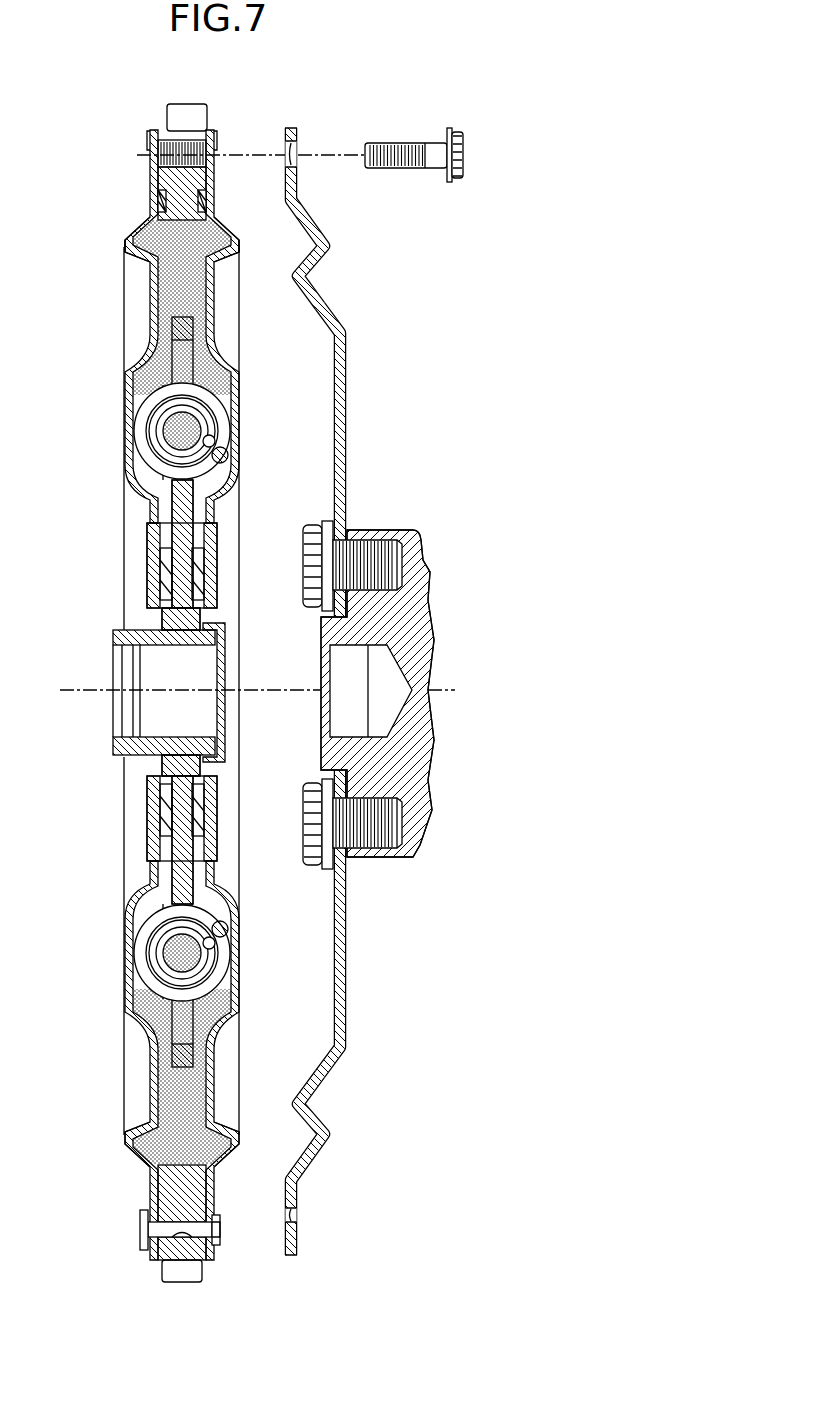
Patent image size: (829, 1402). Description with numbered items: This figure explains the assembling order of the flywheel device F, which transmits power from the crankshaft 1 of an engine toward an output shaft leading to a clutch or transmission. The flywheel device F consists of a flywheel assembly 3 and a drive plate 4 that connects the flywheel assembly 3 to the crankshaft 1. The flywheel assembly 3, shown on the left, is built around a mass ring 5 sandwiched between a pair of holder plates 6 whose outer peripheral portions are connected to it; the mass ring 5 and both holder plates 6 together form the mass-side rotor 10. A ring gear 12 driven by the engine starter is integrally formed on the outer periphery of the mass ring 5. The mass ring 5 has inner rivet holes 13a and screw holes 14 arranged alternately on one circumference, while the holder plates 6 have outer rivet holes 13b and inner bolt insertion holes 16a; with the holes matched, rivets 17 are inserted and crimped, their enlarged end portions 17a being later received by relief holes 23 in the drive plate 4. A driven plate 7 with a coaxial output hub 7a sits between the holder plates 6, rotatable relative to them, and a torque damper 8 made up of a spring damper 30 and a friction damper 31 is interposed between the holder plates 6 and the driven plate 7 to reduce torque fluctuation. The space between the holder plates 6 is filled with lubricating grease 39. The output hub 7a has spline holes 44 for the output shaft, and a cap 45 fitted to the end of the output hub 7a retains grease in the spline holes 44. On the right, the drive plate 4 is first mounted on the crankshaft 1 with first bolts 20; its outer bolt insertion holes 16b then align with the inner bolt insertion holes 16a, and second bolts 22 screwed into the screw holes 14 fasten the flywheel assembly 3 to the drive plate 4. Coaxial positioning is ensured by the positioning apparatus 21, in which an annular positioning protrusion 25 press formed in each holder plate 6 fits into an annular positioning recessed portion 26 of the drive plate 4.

The crankshaft 1 is at (420, 600).
The flywheel assembly 3 is at (216, 123).
The drive plate 4 is at (296, 135).
The mass ring 5 is at (125, 255).
The holder plates 6 is at (150, 330).
The driven plate 7 is at (200, 335).
The output hub 7a is at (118, 630).
The torque damper 8 is at (52, 455).
The mass-side rotor 10 is at (62, 250).
The ring gear 12 is at (187, 105).
The inner rivet holes 13a is at (182, 1238).
The outer rivet holes 13b is at (218, 1228).
The screw holes 14 is at (172, 140).
The inner bolt insertion holes 16a is at (150, 147).
The outer bolt insertion holes 16b is at (297, 153).
The rivets 17 is at (145, 1228).
The enlarged end portions 17a is at (221, 1232).
The first bolts 20 is at (308, 548).
The positioning apparatus 21 is at (396, 215).
The second bolts 22 is at (464, 152).
The relief holes 23 is at (294, 1213).
The annular positioning protrusion 25 is at (122, 242).
The annular positioning recessed portion 26 is at (328, 258).
The spring damper 30 is at (135, 443).
The friction damper 31 is at (148, 562).
The lubricating grease 39 is at (160, 1102).
The spline holes 44 is at (140, 735).
The cap 45 is at (224, 668).
The flywheel device F is at (262, 68).